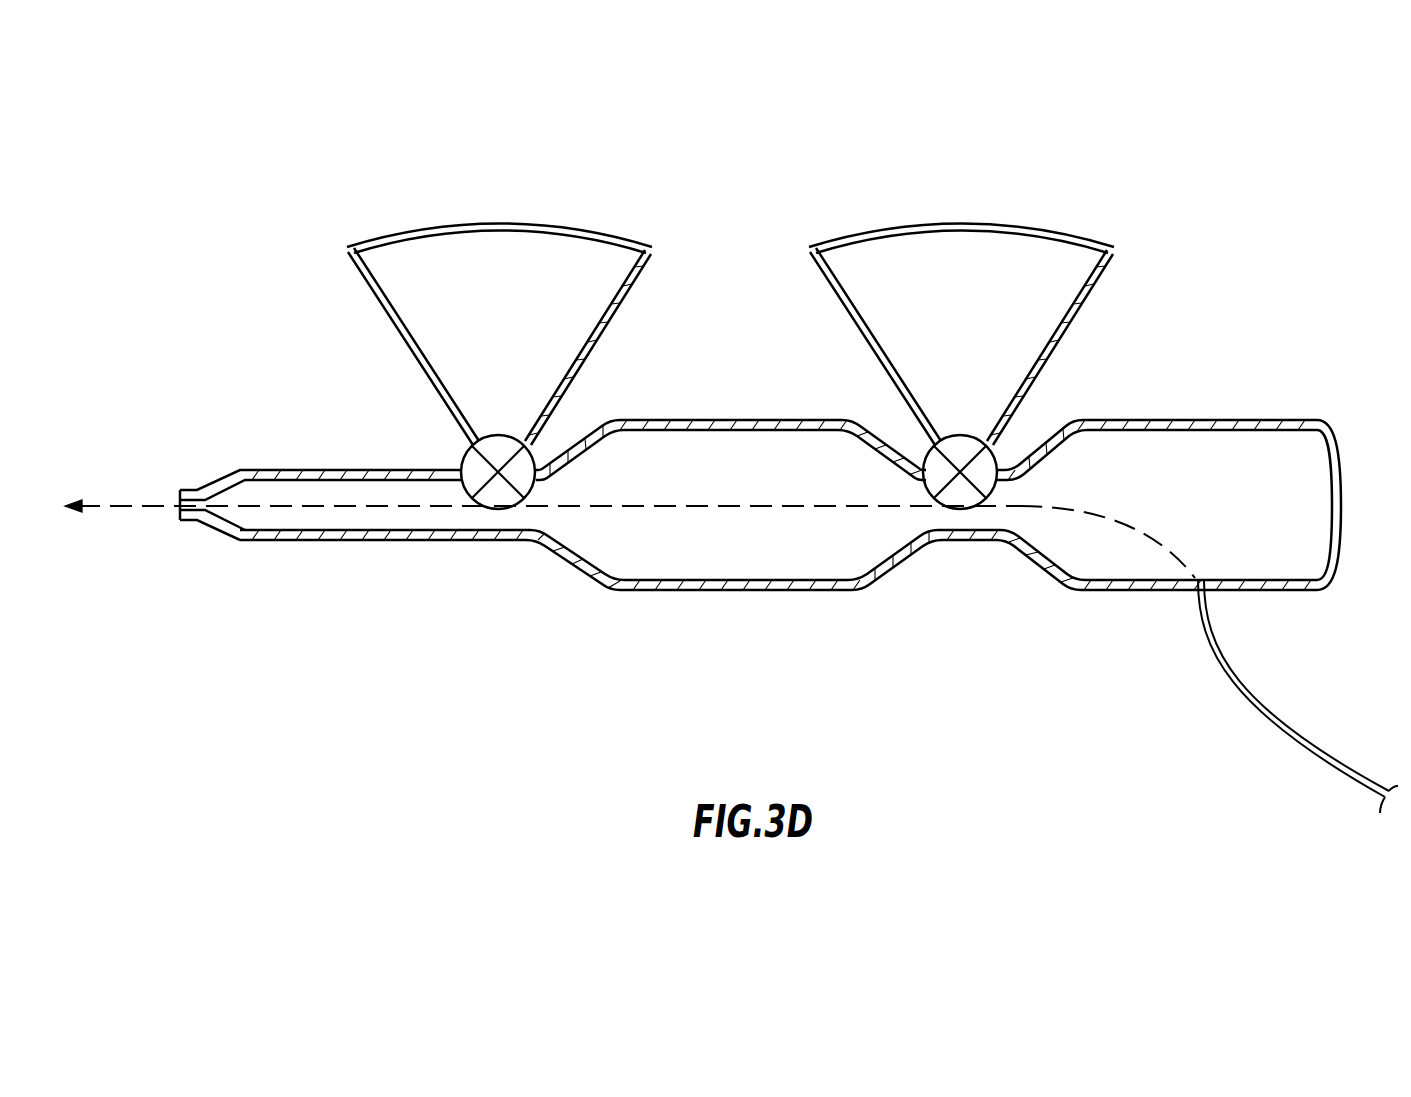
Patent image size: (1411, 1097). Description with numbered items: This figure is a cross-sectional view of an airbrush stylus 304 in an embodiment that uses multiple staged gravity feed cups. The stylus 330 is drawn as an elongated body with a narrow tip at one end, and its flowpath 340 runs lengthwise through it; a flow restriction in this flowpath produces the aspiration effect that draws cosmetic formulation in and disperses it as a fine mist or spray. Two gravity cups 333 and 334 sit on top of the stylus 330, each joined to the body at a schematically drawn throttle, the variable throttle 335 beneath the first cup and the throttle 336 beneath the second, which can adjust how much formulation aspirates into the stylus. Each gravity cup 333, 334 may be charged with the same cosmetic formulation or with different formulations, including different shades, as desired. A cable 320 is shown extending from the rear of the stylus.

The airbrush stylus 304 is at (257, 134).
The cable 320 is at (1260, 717).
The airbrush stylus 330 is at (795, 590).
The gravity cup 333 is at (590, 352).
The gravity cup 334 is at (1050, 352).
The variable throttle 335 is at (530, 493).
The second pivot joint 336 is at (940, 497).
The flowpath 340 is at (1123, 522).